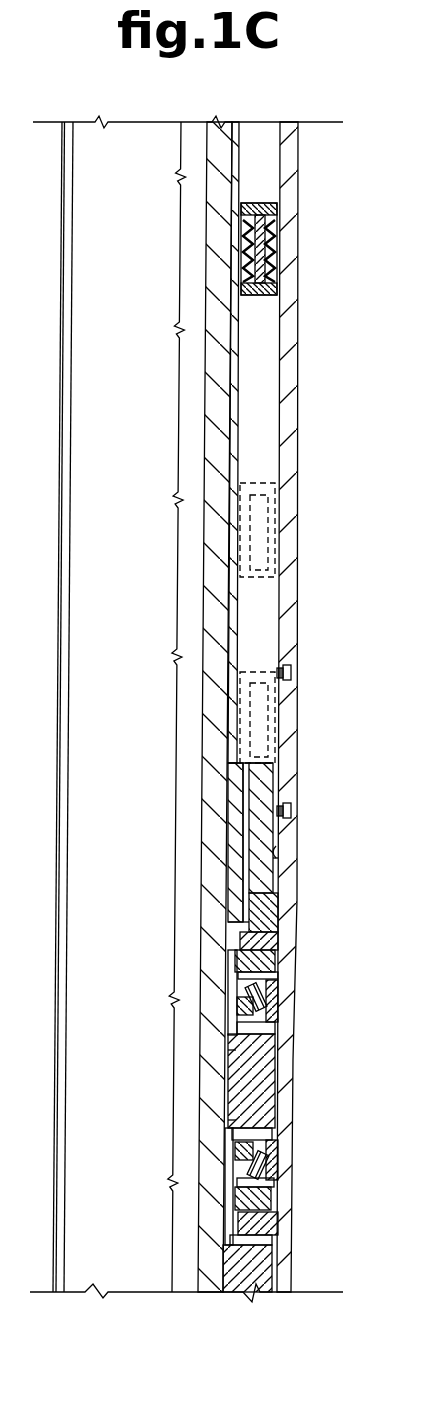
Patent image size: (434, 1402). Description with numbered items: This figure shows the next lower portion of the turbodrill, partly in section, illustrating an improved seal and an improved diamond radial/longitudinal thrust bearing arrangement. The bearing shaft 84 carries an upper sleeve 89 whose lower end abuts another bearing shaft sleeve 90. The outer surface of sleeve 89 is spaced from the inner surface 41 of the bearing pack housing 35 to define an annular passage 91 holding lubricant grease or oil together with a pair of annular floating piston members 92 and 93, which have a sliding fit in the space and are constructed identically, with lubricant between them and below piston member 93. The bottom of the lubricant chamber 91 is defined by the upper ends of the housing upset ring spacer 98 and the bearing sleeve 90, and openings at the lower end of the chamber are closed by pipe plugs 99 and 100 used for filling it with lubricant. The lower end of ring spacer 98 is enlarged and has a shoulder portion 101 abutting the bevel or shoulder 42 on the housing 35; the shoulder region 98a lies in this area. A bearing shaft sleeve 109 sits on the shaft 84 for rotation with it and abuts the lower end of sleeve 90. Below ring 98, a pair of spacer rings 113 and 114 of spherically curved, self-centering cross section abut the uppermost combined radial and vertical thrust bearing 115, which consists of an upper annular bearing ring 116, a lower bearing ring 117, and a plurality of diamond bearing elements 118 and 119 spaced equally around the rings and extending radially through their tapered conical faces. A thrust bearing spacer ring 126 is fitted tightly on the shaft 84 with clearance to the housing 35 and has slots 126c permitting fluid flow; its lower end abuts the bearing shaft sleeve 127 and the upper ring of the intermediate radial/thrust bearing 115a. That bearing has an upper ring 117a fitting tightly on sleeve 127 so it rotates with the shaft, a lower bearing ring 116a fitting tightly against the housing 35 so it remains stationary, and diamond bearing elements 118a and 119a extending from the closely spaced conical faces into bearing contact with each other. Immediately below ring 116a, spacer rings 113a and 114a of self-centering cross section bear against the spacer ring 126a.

The bearing pack housing 35 is at (288, 589).
The inner surface of bearing pack housing 41 is at (269, 622).
The shoulder 42 is at (275, 849).
The bearing shaft 84 is at (213, 578).
The upper sleeve 89 is at (232, 358).
The bearing shaft sleeve 90 is at (235, 845).
The annular passage 91 is at (262, 405).
The floating piston member 92 is at (270, 521).
The floating piston member 93 is at (272, 256).
The housing upset ring spacer 98 is at (258, 788).
The shoulder 98a is at (267, 918).
The pipe plug 99 is at (289, 669).
The pipe plug 100 is at (290, 811).
The shoulder portion 101 is at (276, 858).
The bearing shaft sleeve 109 is at (230, 983).
The spacer ring 113 is at (278, 950).
The spacer ring 114 is at (227, 965).
The combined radial and vertical thrust bearing 115 is at (285, 1015).
The upper annular bearing plate or ring 116 is at (282, 982).
The lower bearing ring 117 is at (228, 1028).
The diamond bearing element 118 is at (268, 993).
The diamond bearing element 119 is at (228, 1017).
The thrust bearing spacer ring 126 is at (265, 1099).
The spacer ring 126a is at (263, 1276).
The slots 126c is at (227, 1058).
The bearing shaft sleeve 127 is at (233, 1233).
The spacer ring 113a is at (275, 1222).
The spacer ring 114a is at (233, 1203).
The intermediate radial/thrust bearing 115a is at (297, 1156).
The lower bearing ring 116a is at (272, 1183).
The upper ring 117a is at (230, 1143).
The diamond bearing element 118a is at (275, 1172).
The diamond bearing element 119a is at (233, 1163).